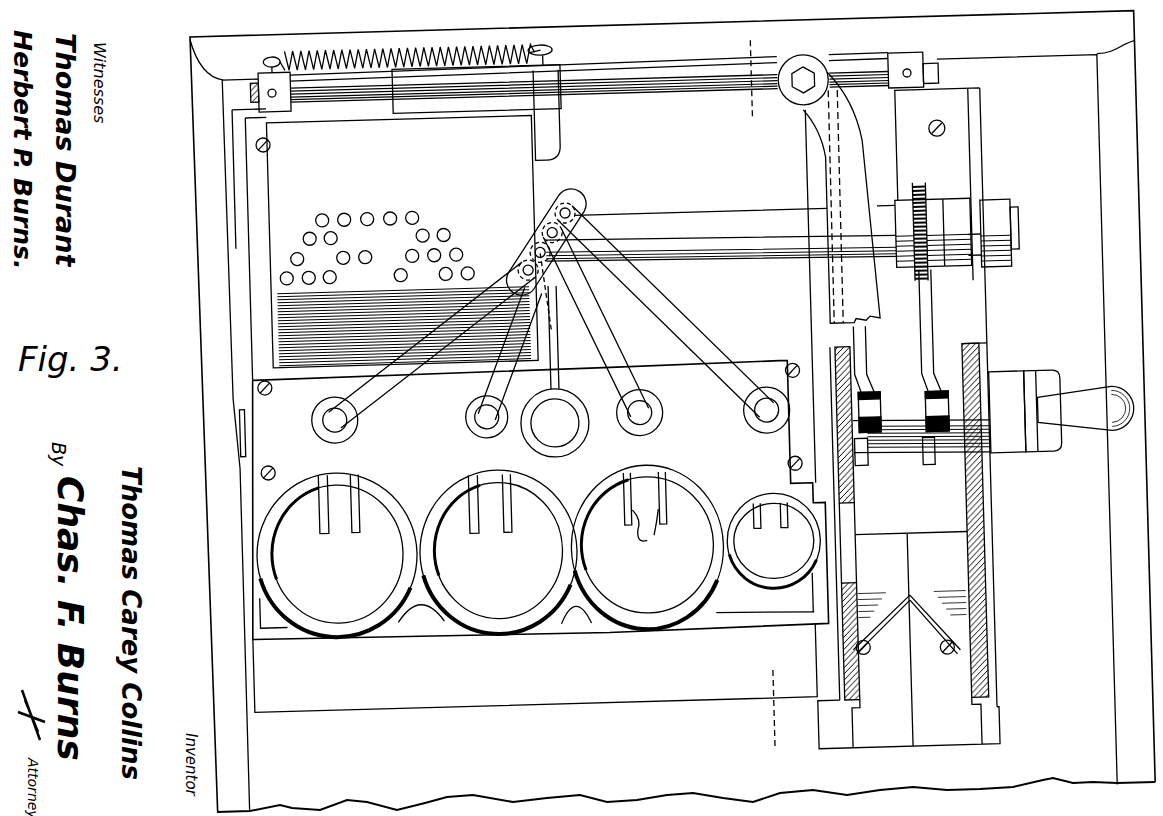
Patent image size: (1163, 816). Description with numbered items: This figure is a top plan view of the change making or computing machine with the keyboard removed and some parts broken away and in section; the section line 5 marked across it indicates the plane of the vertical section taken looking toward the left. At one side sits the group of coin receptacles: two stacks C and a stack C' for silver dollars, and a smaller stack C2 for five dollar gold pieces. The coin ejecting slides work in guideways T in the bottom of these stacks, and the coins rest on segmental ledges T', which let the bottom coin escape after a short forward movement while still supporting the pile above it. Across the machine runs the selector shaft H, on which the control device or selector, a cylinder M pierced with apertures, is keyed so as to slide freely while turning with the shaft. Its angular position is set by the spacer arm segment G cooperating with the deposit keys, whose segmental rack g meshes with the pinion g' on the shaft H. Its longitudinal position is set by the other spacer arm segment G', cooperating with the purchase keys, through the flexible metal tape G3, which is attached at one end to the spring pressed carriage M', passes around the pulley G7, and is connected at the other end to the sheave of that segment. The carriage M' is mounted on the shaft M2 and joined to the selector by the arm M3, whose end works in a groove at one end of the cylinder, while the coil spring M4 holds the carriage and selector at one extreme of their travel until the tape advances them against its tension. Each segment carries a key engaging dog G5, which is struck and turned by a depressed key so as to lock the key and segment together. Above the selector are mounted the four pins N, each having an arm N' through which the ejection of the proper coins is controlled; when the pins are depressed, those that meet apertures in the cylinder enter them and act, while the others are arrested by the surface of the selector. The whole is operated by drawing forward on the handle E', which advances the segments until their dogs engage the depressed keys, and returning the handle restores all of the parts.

The selector cylinder M is at (396, 242).
The spring pressed carriage M' is at (477, 107).
The carriage shaft M2 is at (658, 100).
The arm M3 is at (557, 161).
The coil spring M4 is at (557, 58).
The metal tape G3 is at (663, 76).
The section line 5 is at (764, 395).
The pulley G7 is at (800, 79).
The pinion g' is at (930, 199).
The segmental rack g is at (935, 264).
The spacer arm segment G' is at (871, 378).
The spacer arm segment G is at (881, 352).
The key engaging dog G5 is at (925, 445).
The handle E' is at (1061, 406).
The selector shaft H is at (652, 236).
The pins N is at (558, 234).
The arm N' is at (548, 323).
The coin stack C is at (488, 460).
The coin stack C' is at (555, 436).
The coin stack C2 is at (774, 541).
The guideways T is at (564, 522).
The segmental ledges T' is at (507, 526).